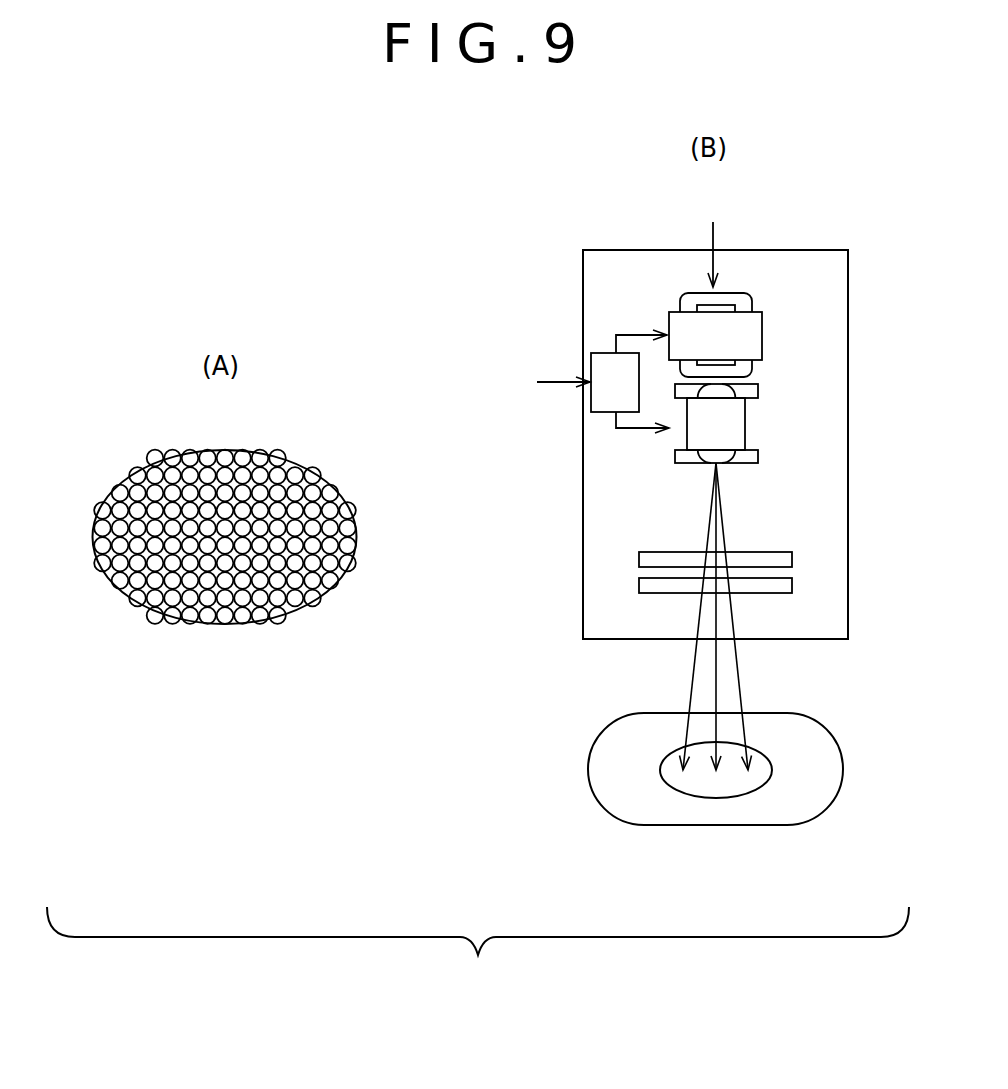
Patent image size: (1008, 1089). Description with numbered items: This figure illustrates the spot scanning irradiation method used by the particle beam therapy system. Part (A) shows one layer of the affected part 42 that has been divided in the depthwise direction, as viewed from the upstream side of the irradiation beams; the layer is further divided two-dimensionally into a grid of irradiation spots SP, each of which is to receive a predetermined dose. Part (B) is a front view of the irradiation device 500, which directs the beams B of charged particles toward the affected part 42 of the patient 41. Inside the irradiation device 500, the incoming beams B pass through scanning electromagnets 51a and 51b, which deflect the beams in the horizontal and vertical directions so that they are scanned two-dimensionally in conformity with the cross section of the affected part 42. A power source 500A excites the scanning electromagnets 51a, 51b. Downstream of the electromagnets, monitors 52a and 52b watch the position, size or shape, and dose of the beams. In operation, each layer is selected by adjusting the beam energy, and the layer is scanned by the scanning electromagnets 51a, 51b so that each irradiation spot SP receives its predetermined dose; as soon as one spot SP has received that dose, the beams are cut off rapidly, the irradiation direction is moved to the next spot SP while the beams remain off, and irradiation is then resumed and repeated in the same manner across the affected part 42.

The irradiation spot SP is at (98, 508).
The affected part 42 is at (356, 538).
The patient 41 is at (843, 762).
The irradiation device 500 is at (610, 288).
The power source 500A is at (591, 353).
The scanning electromagnet 51a is at (762, 330).
The scanning electromagnet 51b is at (745, 418).
The monitor 52a is at (750, 553).
The monitor 52b is at (790, 585).
The beams B is at (714, 239).